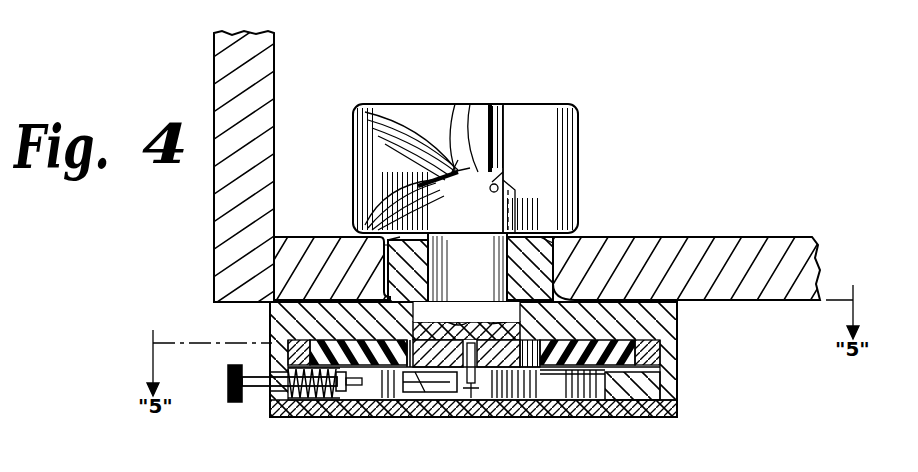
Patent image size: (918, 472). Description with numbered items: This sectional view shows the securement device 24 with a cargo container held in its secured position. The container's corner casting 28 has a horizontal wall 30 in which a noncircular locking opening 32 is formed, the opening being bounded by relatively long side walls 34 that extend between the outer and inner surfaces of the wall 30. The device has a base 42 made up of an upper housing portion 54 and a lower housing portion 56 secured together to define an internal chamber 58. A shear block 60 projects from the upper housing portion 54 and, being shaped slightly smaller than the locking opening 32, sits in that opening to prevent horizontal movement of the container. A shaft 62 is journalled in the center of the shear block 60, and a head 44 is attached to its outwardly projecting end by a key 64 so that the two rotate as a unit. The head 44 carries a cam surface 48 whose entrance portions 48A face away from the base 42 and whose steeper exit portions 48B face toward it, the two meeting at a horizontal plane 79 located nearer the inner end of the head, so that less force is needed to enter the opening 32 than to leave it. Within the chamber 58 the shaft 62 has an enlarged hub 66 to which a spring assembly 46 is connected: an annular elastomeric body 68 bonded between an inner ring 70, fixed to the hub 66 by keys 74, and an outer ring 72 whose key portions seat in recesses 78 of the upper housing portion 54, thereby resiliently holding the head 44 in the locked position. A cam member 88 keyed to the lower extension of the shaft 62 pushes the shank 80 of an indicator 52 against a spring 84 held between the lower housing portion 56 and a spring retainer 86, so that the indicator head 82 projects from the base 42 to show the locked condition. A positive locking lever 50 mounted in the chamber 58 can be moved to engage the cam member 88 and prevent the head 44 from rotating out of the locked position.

The securement device 24 is at (688, 412).
The corner casting 28 is at (277, 62).
The horizontal wall 30 is at (782, 237).
The locking opening 32 is at (575, 260).
The side walls 34 is at (360, 238).
The base 42 is at (647, 412).
The head 44 is at (580, 108).
The spring assembly 46 is at (595, 332).
The cam surface 48 is at (490, 108).
The entrance portions 48A is at (418, 122).
The exit portions 48B is at (383, 208).
The positive locking lever 50 is at (390, 417).
The indicator 52 is at (232, 402).
The upper housing portion 54 is at (662, 345).
The lower housing portion 56 is at (603, 392).
The internal chamber 58 is at (612, 392).
The shear block 60 is at (385, 268).
The shaft 62 is at (480, 280).
The key 64 is at (498, 186).
The hub portion 66 is at (505, 402).
The elastomeric body 68 is at (575, 378).
The inner ring 70 is at (525, 380).
The outer ring 72 is at (660, 360).
The keys 74 is at (450, 380).
The recesses 78 is at (650, 372).
The horizontal plane 79 is at (460, 155).
The shank 80 is at (262, 372).
The indicator head 82 is at (240, 380).
The spring 84 is at (290, 412).
The spring retainer 86 is at (333, 412).
The cam member 88 is at (482, 384).